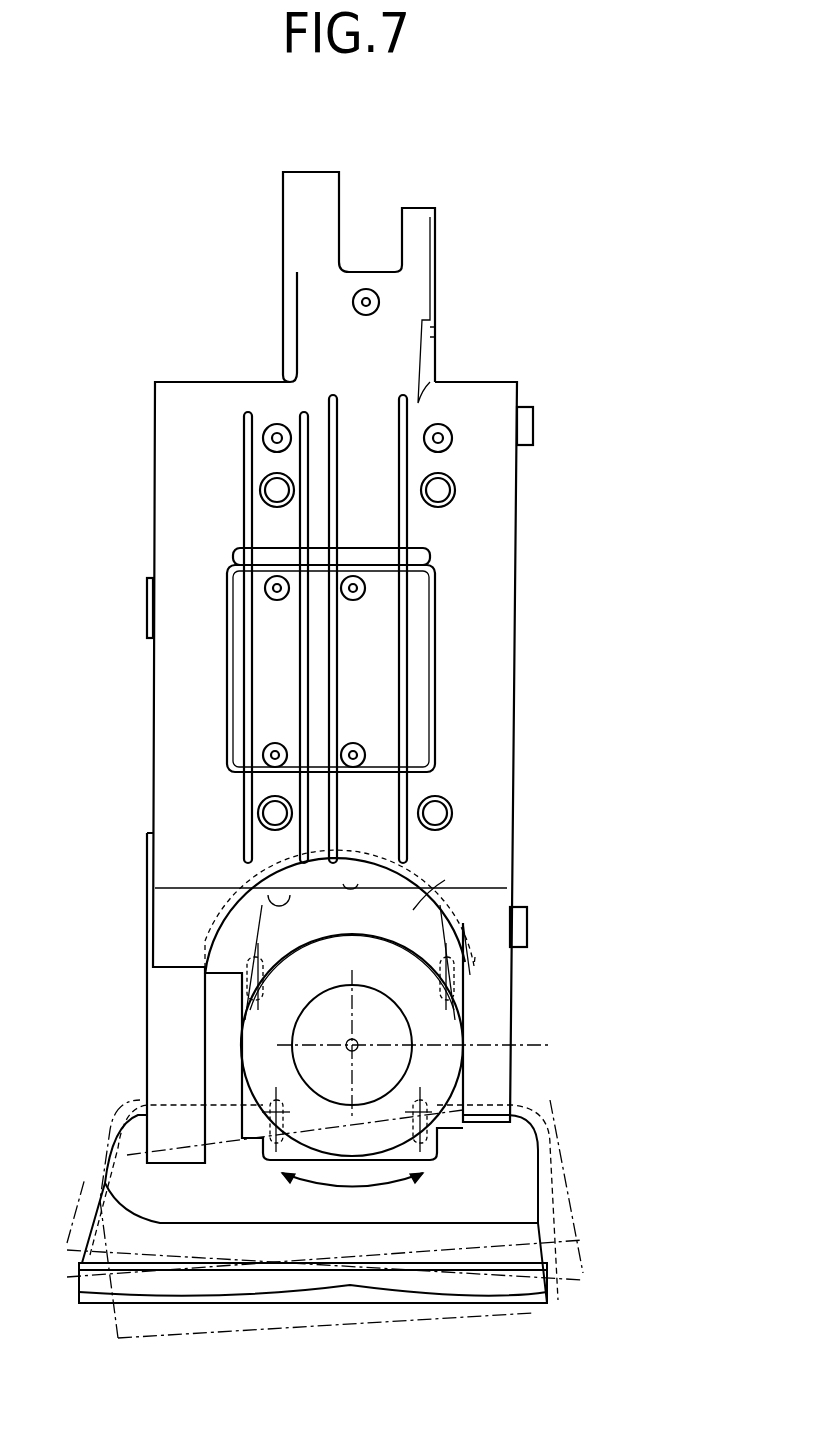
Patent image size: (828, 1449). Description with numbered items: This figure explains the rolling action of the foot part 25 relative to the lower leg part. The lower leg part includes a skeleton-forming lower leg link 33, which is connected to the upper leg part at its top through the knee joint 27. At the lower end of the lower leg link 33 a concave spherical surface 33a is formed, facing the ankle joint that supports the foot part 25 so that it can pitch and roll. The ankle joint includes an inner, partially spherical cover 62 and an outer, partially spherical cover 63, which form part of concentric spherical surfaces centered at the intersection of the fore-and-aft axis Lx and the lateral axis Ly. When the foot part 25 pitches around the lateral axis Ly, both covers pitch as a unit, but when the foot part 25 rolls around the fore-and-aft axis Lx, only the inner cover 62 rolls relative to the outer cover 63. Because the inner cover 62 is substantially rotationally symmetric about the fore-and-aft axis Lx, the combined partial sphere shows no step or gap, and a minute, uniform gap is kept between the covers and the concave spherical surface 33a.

The knee joint 27 is at (283, 215).
The lower leg link 33 is at (527, 613).
The concave spherical surface 33a is at (270, 912).
The outer, partially spherical cover 63 is at (418, 906).
The inner, partially spherical cover 62 is at (450, 1060).
The foot part 25 is at (543, 1163).
The fore-and-aft axis Lx is at (350, 1043).
The lateral axis Ly is at (552, 1044).